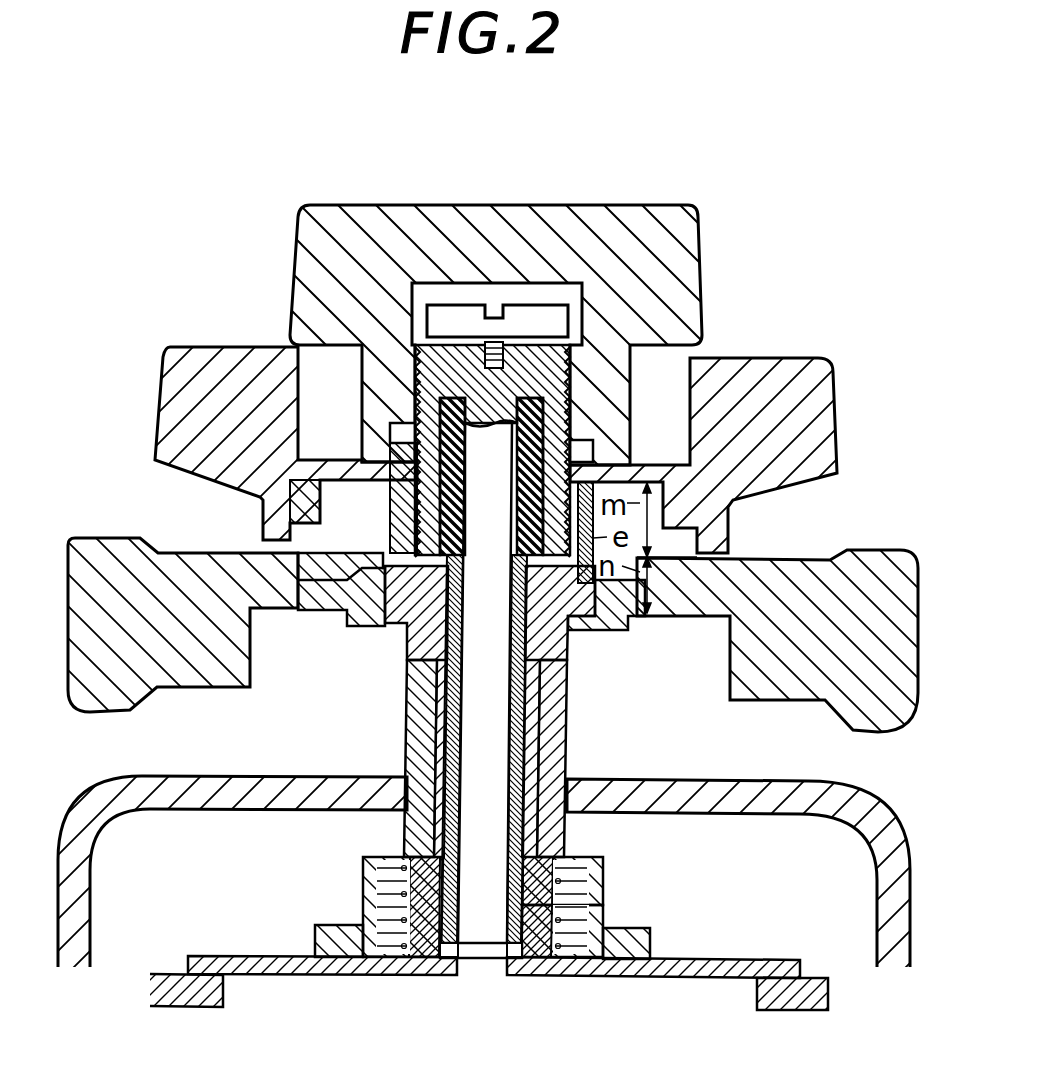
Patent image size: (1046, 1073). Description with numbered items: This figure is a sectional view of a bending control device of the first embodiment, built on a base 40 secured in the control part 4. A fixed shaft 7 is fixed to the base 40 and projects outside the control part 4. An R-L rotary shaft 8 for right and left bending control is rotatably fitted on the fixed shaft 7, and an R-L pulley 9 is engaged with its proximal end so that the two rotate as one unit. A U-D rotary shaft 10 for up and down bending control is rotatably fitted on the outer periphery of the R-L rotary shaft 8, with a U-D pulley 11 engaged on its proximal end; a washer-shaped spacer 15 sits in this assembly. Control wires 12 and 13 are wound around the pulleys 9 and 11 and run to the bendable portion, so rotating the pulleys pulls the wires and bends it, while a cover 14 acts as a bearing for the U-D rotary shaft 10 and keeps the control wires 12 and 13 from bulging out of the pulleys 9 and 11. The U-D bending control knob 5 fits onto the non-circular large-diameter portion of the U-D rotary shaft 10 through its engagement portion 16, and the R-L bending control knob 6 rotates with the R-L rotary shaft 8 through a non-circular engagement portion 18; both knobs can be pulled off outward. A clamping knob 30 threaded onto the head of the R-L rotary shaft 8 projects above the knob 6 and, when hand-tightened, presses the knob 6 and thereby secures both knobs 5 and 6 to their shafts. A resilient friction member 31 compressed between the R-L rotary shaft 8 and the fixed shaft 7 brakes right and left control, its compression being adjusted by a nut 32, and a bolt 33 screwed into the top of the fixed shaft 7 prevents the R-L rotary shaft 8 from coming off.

The control part 4 is at (97, 828).
The U-D bending control knob 5 is at (103, 575).
The R-L bending control knob 6 is at (187, 411).
The fixed shaft 7 is at (480, 723).
The R-L rotary shaft 8 is at (523, 750).
The R-L pulley 9 is at (537, 975).
The U-D rotary shaft 10 is at (530, 727).
The U-D pulley 11 is at (410, 975).
The control wire 12 is at (605, 915).
The control wire 13 is at (582, 858).
The cover 14 is at (420, 760).
The washer-shaped spacer 15 is at (368, 902).
The engagement portion 16 is at (322, 607).
The engagement portion 18 is at (345, 497).
The clamping knob 30 is at (313, 265).
The resilient friction member 31 is at (445, 533).
The nut 32 is at (422, 348).
The bolt 33 is at (580, 325).
The base 40 is at (267, 975).